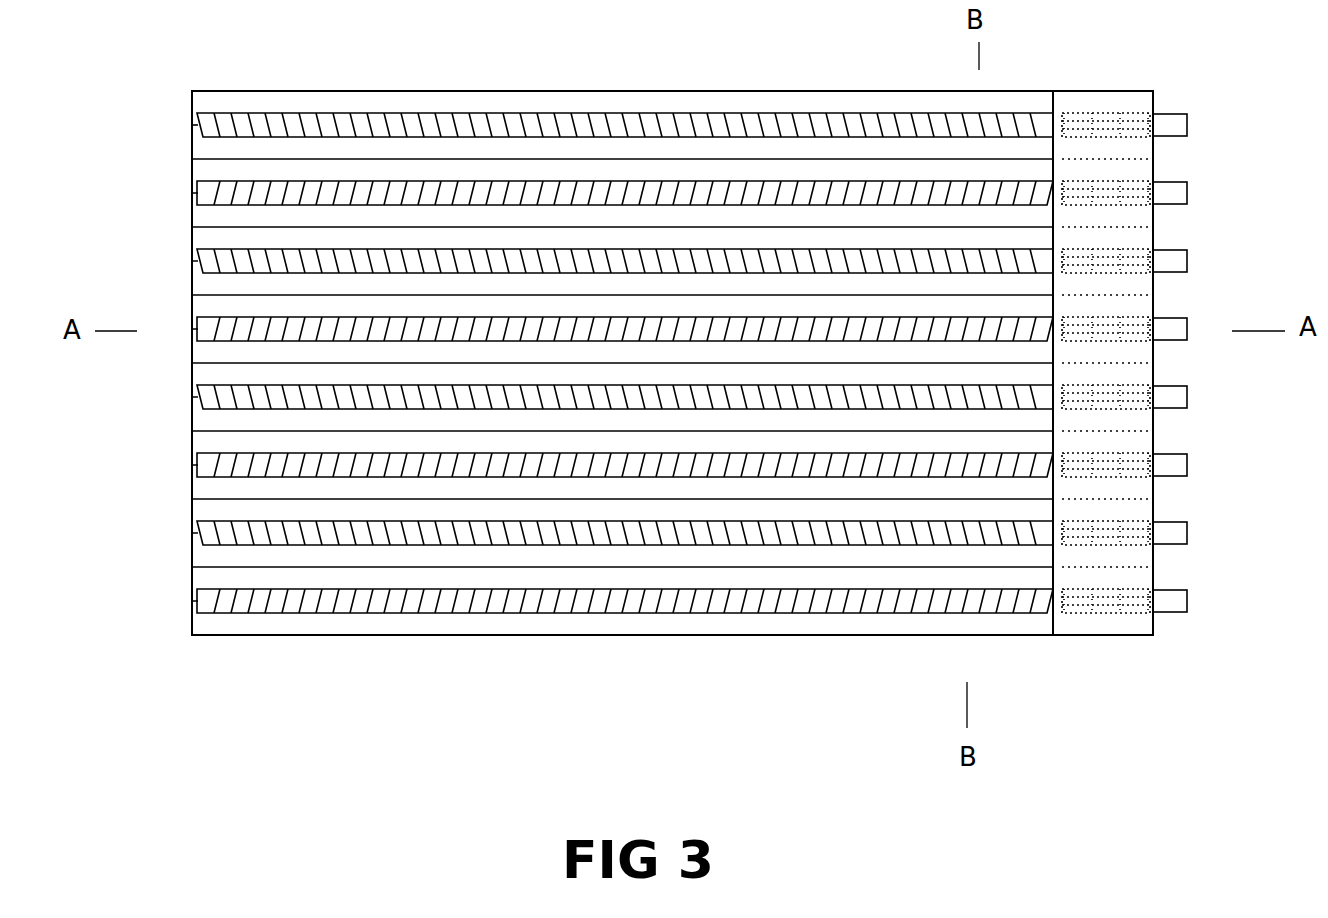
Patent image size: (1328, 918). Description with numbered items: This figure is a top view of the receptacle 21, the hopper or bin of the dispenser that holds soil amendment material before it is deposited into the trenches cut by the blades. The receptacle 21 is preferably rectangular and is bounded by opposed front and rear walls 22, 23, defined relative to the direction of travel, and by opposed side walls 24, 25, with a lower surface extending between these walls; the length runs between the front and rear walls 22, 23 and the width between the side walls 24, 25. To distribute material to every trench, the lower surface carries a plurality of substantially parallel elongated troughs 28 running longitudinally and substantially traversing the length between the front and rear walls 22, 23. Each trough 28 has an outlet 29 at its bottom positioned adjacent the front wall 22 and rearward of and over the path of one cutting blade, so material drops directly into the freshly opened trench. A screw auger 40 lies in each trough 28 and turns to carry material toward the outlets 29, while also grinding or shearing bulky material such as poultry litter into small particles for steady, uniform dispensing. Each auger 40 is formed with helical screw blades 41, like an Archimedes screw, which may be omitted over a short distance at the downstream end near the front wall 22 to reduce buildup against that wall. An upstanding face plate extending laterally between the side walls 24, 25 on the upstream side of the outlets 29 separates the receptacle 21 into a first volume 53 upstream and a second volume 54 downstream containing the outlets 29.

The receptacle 21 is at (572, 90).
The front wall 22 is at (1157, 170).
The rear wall 23 is at (190, 216).
The side wall 24 is at (683, 90).
The side wall 25 is at (650, 637).
The elongated troughs 28 is at (622, 313).
The outlet 29 is at (1115, 120).
The screw auger 40 is at (398, 125).
The helical screw blades 41 is at (622, 83).
The first volume 53 is at (477, 157).
The second volume 54 is at (1083, 157).